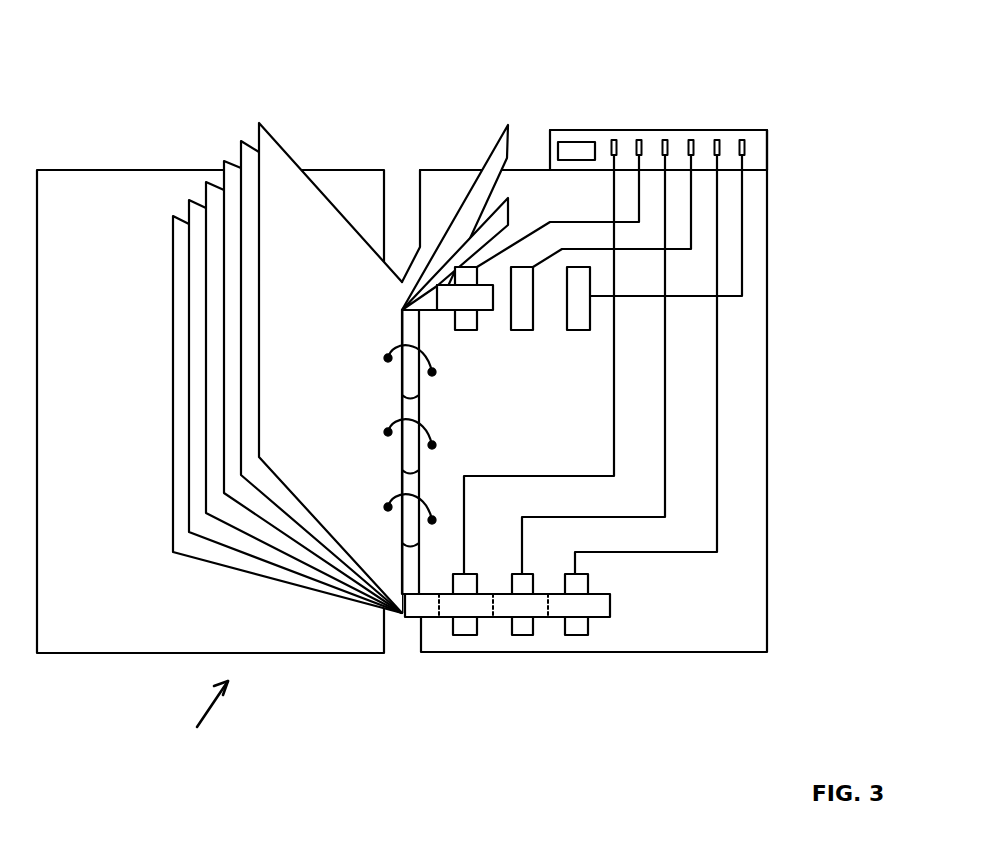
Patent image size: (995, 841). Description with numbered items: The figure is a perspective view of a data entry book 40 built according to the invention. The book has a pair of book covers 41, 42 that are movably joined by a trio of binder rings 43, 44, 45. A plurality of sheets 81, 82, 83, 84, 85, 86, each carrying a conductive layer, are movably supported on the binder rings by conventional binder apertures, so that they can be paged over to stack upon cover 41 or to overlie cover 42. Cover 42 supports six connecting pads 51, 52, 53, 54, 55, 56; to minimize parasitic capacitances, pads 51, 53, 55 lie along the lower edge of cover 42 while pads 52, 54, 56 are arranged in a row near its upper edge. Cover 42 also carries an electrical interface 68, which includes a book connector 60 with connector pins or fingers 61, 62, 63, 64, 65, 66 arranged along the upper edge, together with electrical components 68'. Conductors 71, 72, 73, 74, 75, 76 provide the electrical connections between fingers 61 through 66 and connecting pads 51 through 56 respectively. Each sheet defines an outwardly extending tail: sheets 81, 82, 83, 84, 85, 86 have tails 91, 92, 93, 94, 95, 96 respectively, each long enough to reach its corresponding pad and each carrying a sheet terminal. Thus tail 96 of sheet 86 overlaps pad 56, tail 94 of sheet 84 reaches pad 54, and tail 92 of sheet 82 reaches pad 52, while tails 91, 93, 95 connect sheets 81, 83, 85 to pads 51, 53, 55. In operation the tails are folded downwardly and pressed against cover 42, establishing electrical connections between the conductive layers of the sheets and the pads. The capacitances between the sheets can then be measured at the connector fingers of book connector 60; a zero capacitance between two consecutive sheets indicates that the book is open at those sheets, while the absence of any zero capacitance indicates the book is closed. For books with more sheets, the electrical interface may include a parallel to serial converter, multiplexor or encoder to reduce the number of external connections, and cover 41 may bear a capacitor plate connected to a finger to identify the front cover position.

The data entry book 40 is at (118, 777).
The book cover 41 is at (60, 168).
The book cover 42 is at (767, 420).
The binder ring 43 is at (394, 345).
The binder ring 44 is at (398, 418).
The binder ring 45 is at (397, 497).
The connecting pad 51 is at (455, 633).
The connecting pad 52 is at (457, 330).
The connecting pad 53 is at (518, 632).
The connecting pad 54 is at (518, 330).
The connecting pad 55 is at (572, 638).
The connecting pad 56 is at (575, 330).
The book connector 60 is at (767, 147).
The connector finger 61 is at (614, 138).
The connector finger 62 is at (639, 138).
The connector finger 63 is at (665, 138).
The connector finger 64 is at (691, 138).
The connector finger 65 is at (717, 138).
The connector finger 66 is at (740, 138).
The electrical interface 68 is at (692, 154).
The electrical components 68' is at (552, 115).
The conductor 71 is at (616, 418).
The conductor 72 is at (575, 222).
The conductor 73 is at (668, 443).
The conductor 74 is at (691, 240).
The conductor 75 is at (698, 554).
The conductor 76 is at (742, 287).
The sheet 81 is at (172, 337).
The sheet 82 is at (190, 280).
The sheet 83 is at (205, 193).
The sheet 84 is at (223, 160).
The sheet 85 is at (244, 143).
The sheet 86 is at (286, 155).
The extending tail 91 is at (477, 605).
The extending tail 92 is at (493, 307).
The extending tail 93 is at (535, 603).
The extending tail 94 is at (496, 215).
The extending tail 95 is at (603, 610).
The extending tail 96 is at (496, 145).